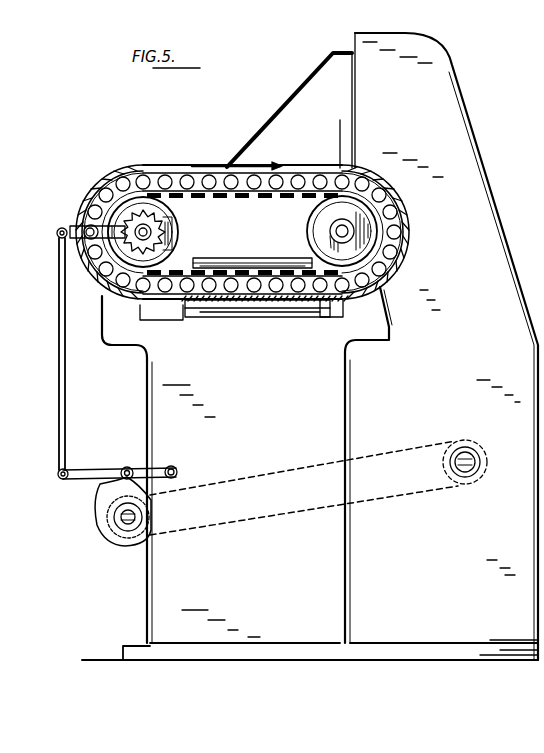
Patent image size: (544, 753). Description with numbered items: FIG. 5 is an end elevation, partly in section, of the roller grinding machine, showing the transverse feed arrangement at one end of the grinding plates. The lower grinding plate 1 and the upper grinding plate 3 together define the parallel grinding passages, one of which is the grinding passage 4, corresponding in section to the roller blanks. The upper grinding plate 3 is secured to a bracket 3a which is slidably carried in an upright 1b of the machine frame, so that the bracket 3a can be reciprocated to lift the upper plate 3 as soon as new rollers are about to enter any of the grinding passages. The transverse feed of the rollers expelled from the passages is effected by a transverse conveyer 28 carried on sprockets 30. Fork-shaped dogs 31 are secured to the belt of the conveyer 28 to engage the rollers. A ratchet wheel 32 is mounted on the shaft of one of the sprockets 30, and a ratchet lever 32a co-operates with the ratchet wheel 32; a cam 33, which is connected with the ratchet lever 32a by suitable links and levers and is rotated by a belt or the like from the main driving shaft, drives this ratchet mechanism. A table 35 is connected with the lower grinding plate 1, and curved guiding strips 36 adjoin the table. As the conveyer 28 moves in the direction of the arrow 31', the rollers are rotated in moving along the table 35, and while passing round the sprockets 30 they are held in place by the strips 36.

The lower grinding plate 1 is at (248, 308).
The upright 1b is at (468, 140).
The upper grinding plate 3 is at (264, 262).
The bracket 3a is at (303, 133).
The grinding passage 4 is at (290, 308).
The transverse conveyer 28 is at (298, 167).
The sprockets 30 is at (180, 231).
The fork-shaped dogs 31 is at (215, 265).
The arrow 31' is at (237, 156).
The ratchet wheel 32 is at (180, 221).
The ratchet lever 32a is at (75, 225).
The cam 33 is at (105, 503).
The table 35 is at (150, 303).
The curved guiding strips 36 is at (103, 183).